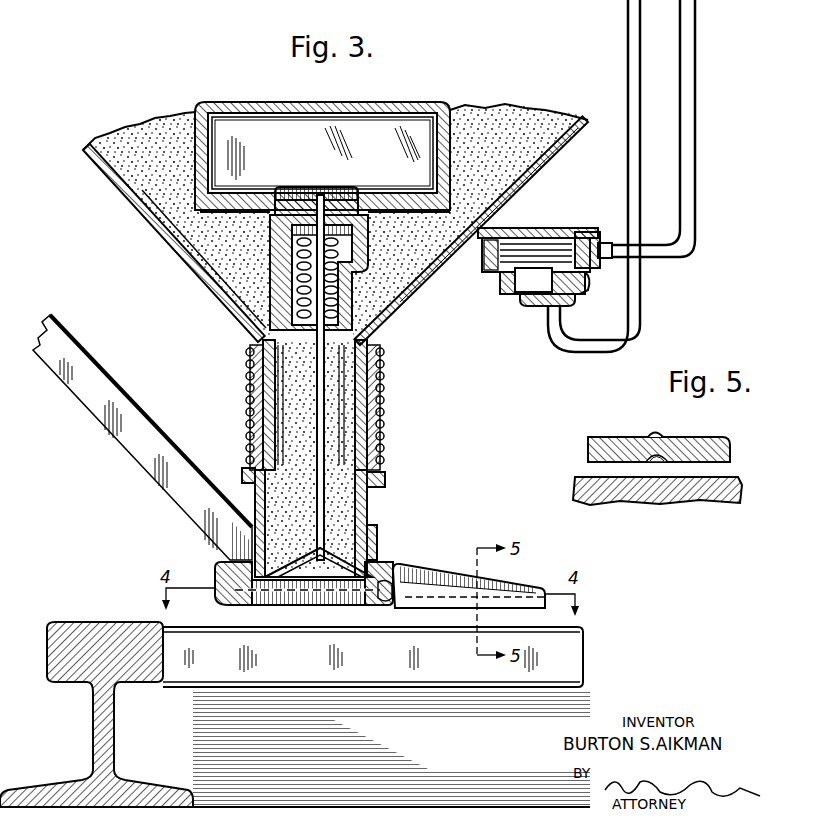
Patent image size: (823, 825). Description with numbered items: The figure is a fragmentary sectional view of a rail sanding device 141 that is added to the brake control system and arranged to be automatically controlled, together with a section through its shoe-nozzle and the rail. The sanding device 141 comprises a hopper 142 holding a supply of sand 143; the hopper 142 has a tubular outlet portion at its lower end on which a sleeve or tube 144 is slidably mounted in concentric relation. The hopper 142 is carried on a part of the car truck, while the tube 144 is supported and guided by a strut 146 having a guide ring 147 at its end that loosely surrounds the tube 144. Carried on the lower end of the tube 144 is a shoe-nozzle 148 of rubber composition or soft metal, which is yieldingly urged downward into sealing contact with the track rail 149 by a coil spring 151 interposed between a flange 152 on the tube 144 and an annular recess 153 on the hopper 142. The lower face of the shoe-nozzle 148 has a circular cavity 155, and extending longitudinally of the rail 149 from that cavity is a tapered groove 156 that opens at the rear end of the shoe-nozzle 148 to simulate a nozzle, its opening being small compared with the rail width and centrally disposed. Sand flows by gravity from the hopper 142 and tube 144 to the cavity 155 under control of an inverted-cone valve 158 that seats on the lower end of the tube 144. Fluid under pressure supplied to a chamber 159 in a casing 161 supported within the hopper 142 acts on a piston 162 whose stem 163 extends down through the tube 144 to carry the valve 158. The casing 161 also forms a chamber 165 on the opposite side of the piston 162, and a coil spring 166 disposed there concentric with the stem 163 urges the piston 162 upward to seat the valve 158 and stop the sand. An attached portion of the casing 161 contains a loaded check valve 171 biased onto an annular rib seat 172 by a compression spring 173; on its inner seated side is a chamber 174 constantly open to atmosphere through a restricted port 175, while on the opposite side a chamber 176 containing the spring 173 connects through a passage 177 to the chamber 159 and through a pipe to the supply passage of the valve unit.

In FIG. 3, the sanding device 141 is at (190, 272).
In FIG. 3, the hopper 142 is at (215, 296).
In FIG. 3, the sand 143 is at (482, 128).
In FIG. 3, the sleeve or tube 144 is at (370, 504).
In FIG. 3, the strut 146 is at (68, 353).
In FIG. 3, the guide ring 147 is at (379, 548).
In FIG. 3, the shoe-nozzle 148 is at (538, 584).
In FIG. 5, the shoe-nozzle 148 is at (588, 447).
In FIG. 3, the track rail 149 is at (584, 662).
In FIG. 5, the track rail 149 is at (578, 489).
In FIG. 3, the coil spring 151 is at (248, 432).
In FIG. 3, the flange 152 is at (387, 478).
In FIG. 3, the annular recess 153 is at (386, 398).
In FIG. 3, the circular cavity 155 is at (282, 600).
In FIG. 3, the tapered groove 156 is at (384, 598).
In FIG. 5, the tapered groove 156 is at (652, 444).
In FIG. 3, the valve 158 is at (328, 598).
In FIG. 3, the chamber 159 is at (312, 132).
In FIG. 3, the casing 161 is at (272, 104).
In FIG. 3, the piston 162 is at (332, 200).
In FIG. 3, the stem 163 is at (262, 405).
In FIG. 3, the chamber 165 is at (405, 290).
In FIG. 3, the coil spring 166 is at (290, 312).
In FIG. 3, the check valve 171 is at (500, 270).
In FIG. 3, the annular rib seat 172 is at (572, 280).
In FIG. 3, the compression spring 173 is at (528, 250).
In FIG. 3, the chamber 174 is at (565, 300).
In FIG. 3, the restricted port 175 is at (506, 290).
In FIG. 3, the chamber 176 is at (572, 236).
In FIG. 3, the passage 177 is at (500, 228).